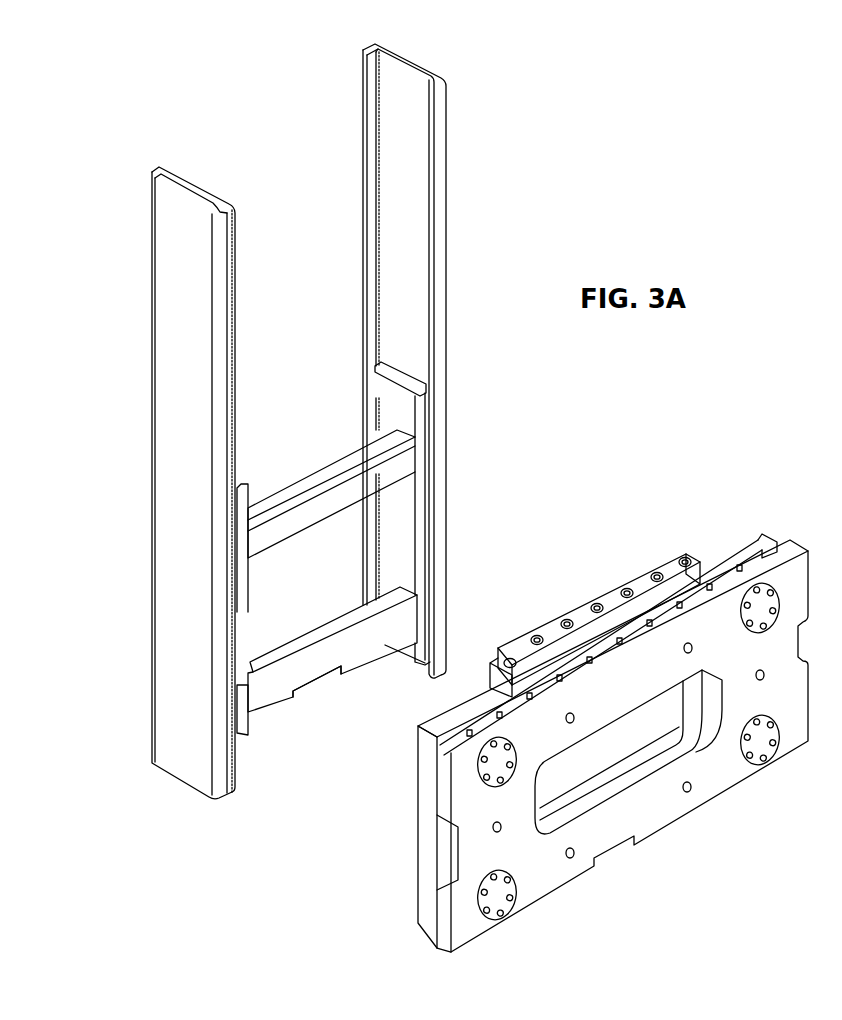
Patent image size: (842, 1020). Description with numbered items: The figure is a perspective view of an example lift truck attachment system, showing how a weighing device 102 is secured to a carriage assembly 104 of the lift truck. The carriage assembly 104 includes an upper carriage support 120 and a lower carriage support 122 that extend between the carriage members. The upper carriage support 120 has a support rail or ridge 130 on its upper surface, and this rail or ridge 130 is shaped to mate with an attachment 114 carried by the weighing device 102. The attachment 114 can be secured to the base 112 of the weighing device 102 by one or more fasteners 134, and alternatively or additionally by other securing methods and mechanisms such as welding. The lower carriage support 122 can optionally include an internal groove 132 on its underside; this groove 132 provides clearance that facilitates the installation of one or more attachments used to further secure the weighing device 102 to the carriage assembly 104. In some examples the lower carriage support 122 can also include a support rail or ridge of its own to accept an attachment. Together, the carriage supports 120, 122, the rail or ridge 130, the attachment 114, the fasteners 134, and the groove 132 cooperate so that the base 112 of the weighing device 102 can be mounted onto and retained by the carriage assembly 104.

The weighing device 102 is at (674, 827).
The carriage assembly 104 is at (336, 386).
The base 112 is at (418, 923).
The attachment 114 is at (658, 563).
The upper carriage support 120 is at (398, 470).
The lower carriage support 122 is at (343, 620).
The support rail or ridge 130 is at (373, 441).
The internal groove 132 is at (313, 685).
The fasteners 134 is at (685, 556).